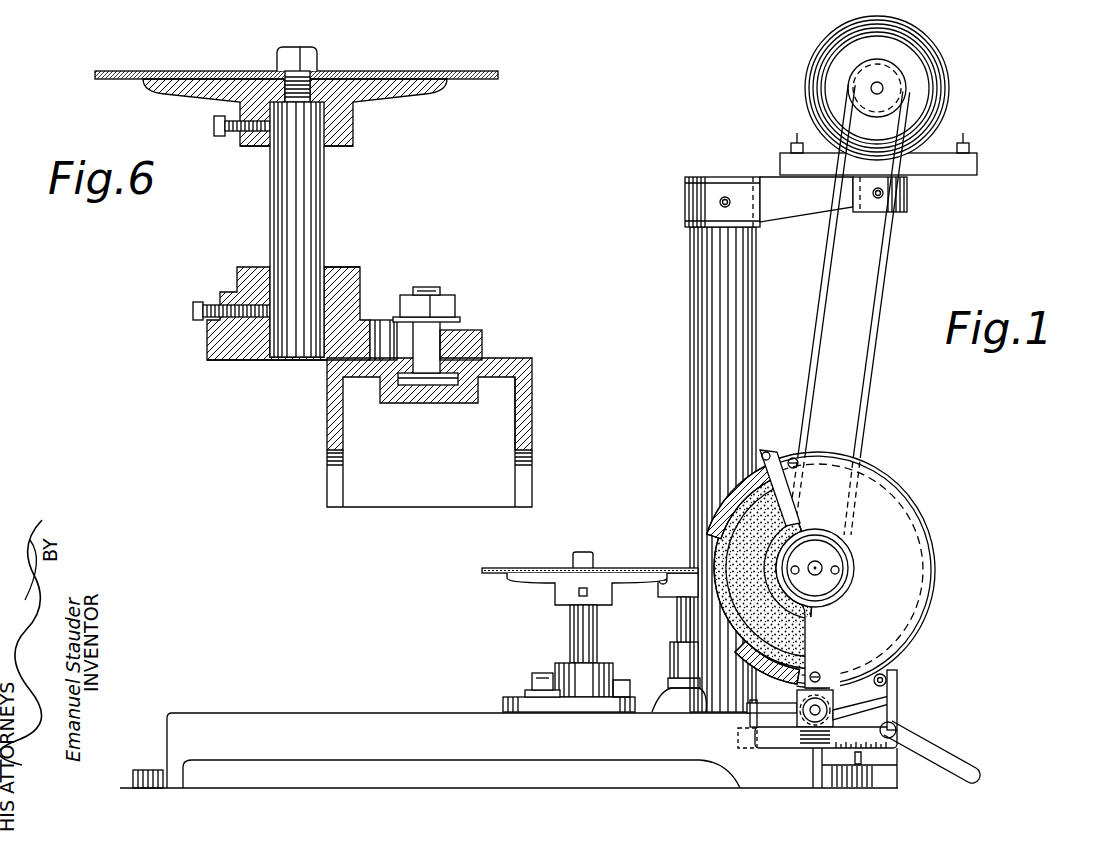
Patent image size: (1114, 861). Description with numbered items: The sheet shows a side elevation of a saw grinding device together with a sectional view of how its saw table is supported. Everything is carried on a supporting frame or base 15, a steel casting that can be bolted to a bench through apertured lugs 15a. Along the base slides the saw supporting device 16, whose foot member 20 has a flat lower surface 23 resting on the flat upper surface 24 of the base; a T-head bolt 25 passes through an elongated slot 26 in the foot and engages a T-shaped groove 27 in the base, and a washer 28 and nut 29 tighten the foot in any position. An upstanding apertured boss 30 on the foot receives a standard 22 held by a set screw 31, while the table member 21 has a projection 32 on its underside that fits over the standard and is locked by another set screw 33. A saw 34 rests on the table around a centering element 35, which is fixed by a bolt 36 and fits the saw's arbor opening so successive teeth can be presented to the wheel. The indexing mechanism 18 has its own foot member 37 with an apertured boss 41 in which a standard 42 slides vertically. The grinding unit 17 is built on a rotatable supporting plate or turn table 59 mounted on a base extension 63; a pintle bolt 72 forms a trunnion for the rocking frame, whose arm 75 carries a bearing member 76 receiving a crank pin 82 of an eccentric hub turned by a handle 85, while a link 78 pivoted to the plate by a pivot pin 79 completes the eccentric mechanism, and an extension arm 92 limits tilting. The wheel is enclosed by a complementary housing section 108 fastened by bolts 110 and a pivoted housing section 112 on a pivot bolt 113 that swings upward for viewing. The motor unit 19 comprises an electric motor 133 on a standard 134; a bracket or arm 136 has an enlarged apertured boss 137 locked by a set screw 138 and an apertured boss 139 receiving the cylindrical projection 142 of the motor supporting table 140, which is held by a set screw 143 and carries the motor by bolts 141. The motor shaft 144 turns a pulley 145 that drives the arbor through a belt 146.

In FIG. 6, the supporting frame or base 15 is at (330, 412).
In FIG. 1, the supporting frame or base 15 is at (362, 713).
In FIG. 1, the apertured lugs 15a is at (143, 770).
In FIG. 1, the saw supporting device 16 is at (556, 603).
In FIG. 1, the grinding unit 17 is at (905, 493).
In FIG. 1, the indexing mechanism 18 is at (680, 572).
In FIG. 1, the motor unit 19 is at (806, 62).
In FIG. 6, the foot member 20 is at (207, 340).
In FIG. 1, the foot member 20 is at (505, 702).
In FIG. 6, the table member 21 is at (412, 84).
In FIG. 1, the table member 21 is at (521, 579).
In FIG. 6, the standard 22 is at (270, 202).
In FIG. 1, the standard 22 is at (597, 643).
In FIG. 6, the flat lower surface 23 is at (263, 362).
In FIG. 6, the flat upper surface 24 is at (532, 362).
In FIG. 6, the T-head bolt 25 is at (435, 345).
In FIG. 6, the elongated slot 26 is at (382, 318).
In FIG. 6, the T-shaped groove 27 is at (480, 378).
In FIG. 6, the washer 28 is at (455, 312).
In FIG. 6, the nut 29 is at (441, 288).
In FIG. 1, the nut 29 is at (533, 683).
In FIG. 6, the upstanding apertured boss 30 is at (344, 262).
In FIG. 1, the upstanding apertured boss 30 is at (560, 665).
In FIG. 6, the set screw 31 is at (193, 308).
In FIG. 6, the projection 32 is at (345, 128).
In FIG. 6, the set screw 33 is at (214, 126).
In FIG. 6, the saw 34 is at (392, 71).
In FIG. 1, the saw 34 is at (542, 568).
In FIG. 6, the centering element 35 is at (312, 71).
In FIG. 6, the bolt 36 is at (296, 47).
In FIG. 1, the foot member 37 is at (660, 697).
In FIG. 1, the upstanding apertured boss 41 is at (670, 656).
In FIG. 1, the standard 42 is at (677, 617).
In FIG. 1, the rotatable supporting plate or turn table 59 is at (738, 739).
In FIG. 1, the base extension 63 is at (790, 762).
In FIG. 1, the pintle bolt 72 is at (826, 721).
In FIG. 1, the arm or projection 75 is at (856, 701).
In FIG. 1, the bearing member 76 is at (860, 685).
In FIG. 1, the link 78 is at (893, 712).
In FIG. 1, the pivot pin 79 is at (896, 751).
In FIG. 1, the crank pin 82 is at (888, 678).
In FIG. 1, the handle 85 is at (950, 746).
In FIG. 1, the extension arm 92 is at (780, 706).
In FIG. 1, the complementary housing section 108 is at (829, 608).
In FIG. 1, the bolts 110 is at (938, 565).
In FIG. 1, the pivoted housing section 112 is at (722, 492).
In FIG. 1, the pivot bolt 113 is at (770, 449).
In FIG. 1, the electric motor 133 is at (928, 63).
In FIG. 1, the standard 134 is at (694, 348).
In FIG. 1, the bracket or arm 136 is at (788, 182).
In FIG. 1, the enlarged apertured boss 137 is at (686, 191).
In FIG. 1, the set screw 138 is at (721, 203).
In FIG. 1, the apertured boss 139 is at (908, 195).
In FIG. 1, the motor supporting table 140 is at (977, 168).
In FIG. 1, the bolts 141 is at (797, 140).
In FIG. 1, the cylindrical projection 142 is at (838, 222).
In FIG. 1, the set screw 143 is at (880, 197).
In FIG. 1, the motor shaft 144 is at (878, 84).
In FIG. 1, the pulley 145 is at (897, 92).
In FIG. 1, the belt 146 is at (888, 283).